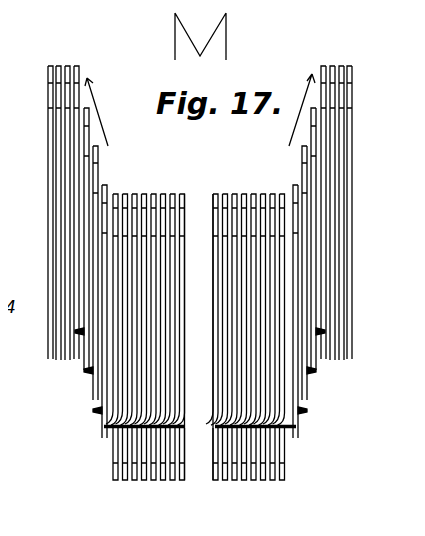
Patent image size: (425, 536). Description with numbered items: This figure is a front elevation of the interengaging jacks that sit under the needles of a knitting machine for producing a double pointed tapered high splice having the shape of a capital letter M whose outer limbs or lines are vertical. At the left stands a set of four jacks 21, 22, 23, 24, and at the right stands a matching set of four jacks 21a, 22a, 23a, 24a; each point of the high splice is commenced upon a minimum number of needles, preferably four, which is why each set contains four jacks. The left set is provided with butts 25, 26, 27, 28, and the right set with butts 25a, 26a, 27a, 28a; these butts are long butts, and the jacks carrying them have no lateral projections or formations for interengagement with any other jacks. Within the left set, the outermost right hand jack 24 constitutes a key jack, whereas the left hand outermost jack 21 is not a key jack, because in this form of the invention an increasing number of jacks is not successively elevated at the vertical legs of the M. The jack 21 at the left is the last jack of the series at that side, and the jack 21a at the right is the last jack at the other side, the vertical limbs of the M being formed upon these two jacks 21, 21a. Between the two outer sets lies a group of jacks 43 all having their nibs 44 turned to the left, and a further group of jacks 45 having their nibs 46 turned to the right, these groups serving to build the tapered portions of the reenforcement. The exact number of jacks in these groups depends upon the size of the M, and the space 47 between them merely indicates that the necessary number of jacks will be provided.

The jack 21 is at (40, 60).
The jack 22 is at (50, 58).
The jack 23 is at (61, 58).
The key jack 24 is at (72, 60).
The butt 25 is at (44, 348).
The butt 26 is at (50, 354).
The butt 27 is at (59, 355).
The butt 28 is at (70, 352).
The jack 21a is at (346, 56).
The jack 22a is at (328, 54).
The jack 23a is at (317, 55).
The jack 24a is at (311, 57).
The butt 25a is at (345, 341).
The butt 26a is at (336, 348).
The butt 27a is at (326, 352).
The butt 28a is at (314, 356).
The group of jacks 43 is at (178, 481).
The nibs 44 is at (103, 424).
The group of jacks 45 is at (289, 481).
The nibs 46 is at (207, 424).
The space 47 is at (191, 200).